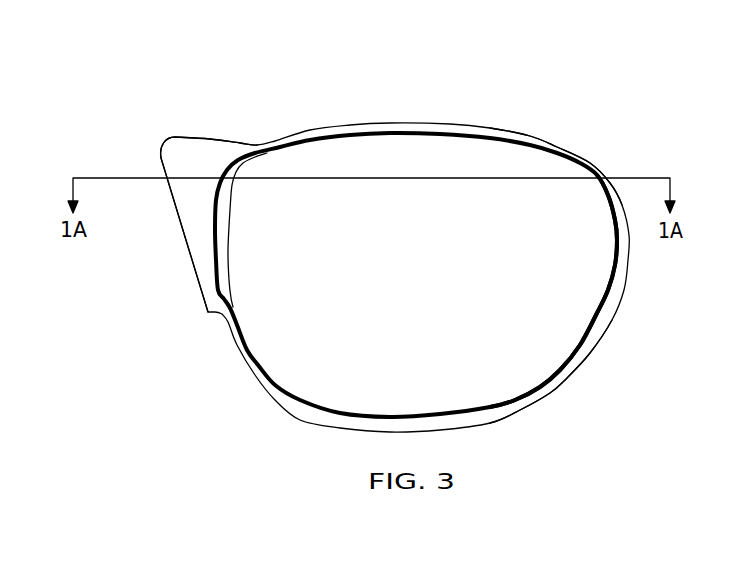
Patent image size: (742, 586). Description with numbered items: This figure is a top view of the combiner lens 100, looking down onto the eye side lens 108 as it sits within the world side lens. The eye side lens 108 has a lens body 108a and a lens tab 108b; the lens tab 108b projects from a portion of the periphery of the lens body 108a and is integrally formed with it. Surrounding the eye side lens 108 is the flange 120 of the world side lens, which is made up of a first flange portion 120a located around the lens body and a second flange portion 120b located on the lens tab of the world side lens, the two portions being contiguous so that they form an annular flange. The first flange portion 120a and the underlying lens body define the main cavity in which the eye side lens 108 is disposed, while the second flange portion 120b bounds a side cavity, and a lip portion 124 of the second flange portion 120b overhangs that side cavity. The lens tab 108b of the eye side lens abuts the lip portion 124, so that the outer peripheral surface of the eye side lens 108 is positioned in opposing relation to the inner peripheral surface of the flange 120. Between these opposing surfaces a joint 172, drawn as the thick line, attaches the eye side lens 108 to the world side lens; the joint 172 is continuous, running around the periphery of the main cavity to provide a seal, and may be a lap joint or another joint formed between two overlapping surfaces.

The combiner lens 100 is at (375, 234).
The eye side lens 108 is at (411, 262).
The lens body 108a is at (525, 370).
The lens tab 108b is at (238, 173).
The flange 120 is at (369, 257).
The first flange portion 120a is at (562, 147).
The second flange portion 120b is at (195, 280).
The lip portion 124 is at (188, 213).
The joint 172 is at (452, 135).